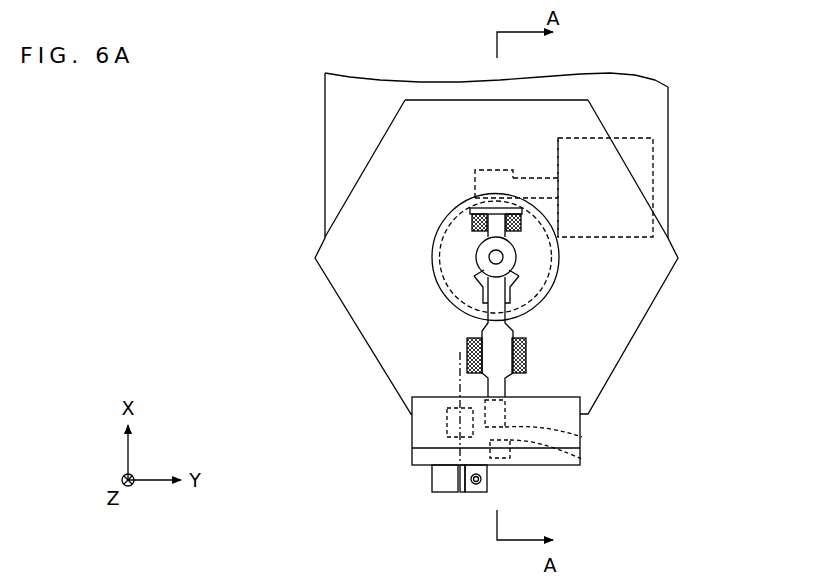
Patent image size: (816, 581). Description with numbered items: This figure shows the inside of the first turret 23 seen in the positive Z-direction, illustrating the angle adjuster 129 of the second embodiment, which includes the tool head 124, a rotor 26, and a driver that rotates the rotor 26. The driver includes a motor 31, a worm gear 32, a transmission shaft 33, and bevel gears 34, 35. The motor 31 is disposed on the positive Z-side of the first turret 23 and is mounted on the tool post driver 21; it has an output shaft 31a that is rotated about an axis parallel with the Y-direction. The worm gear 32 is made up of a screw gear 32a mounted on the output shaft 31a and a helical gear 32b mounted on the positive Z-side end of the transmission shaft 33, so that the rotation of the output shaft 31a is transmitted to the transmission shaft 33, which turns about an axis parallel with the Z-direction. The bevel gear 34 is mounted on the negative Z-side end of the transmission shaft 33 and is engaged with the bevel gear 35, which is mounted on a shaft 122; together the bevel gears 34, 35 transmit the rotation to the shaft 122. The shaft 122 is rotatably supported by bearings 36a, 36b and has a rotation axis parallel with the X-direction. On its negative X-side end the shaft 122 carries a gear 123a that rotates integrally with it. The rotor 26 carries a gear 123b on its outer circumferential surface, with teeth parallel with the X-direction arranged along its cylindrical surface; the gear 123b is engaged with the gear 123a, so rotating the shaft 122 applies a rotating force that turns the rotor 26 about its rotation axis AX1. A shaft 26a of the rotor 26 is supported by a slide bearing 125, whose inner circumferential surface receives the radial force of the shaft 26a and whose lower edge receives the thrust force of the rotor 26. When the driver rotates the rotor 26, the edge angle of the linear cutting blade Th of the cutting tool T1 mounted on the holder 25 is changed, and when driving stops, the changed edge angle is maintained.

The tool post driver 21 is at (663, 110).
The first turret 23 is at (622, 172).
The motor 31 is at (648, 152).
The output shaft 31a is at (540, 180).
The worm gear 32 is at (464, 31).
The screw gear 32a is at (488, 170).
The helical gear 32b is at (445, 212).
The transmission shaft 33 is at (504, 258).
The bevel gear 34 is at (477, 258).
The bevel gear 35 is at (476, 277).
The bearing 36a is at (522, 220).
The bearing 36b is at (526, 347).
The shaft 122 is at (514, 331).
The gear 123a is at (583, 437).
The gear 123b is at (583, 460).
The tool head 124 is at (418, 438).
The slide bearing 125 is at (450, 412).
The angle adjuster 129 is at (388, 427).
The holder 25 is at (433, 477).
The rotor 26 is at (454, 448).
The shaft 26a is at (455, 405).
The rotation axis AX1 is at (455, 350).
The cutting tool T1 is at (488, 475).
The linear cutting blade Th is at (477, 492).